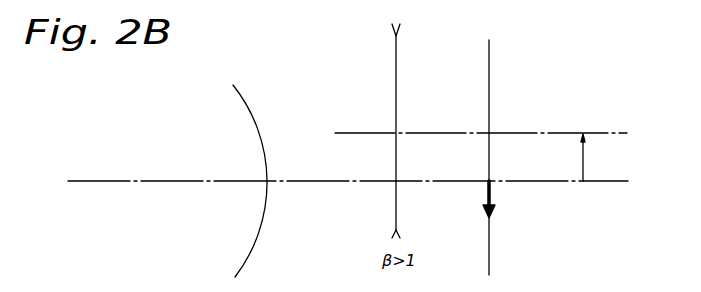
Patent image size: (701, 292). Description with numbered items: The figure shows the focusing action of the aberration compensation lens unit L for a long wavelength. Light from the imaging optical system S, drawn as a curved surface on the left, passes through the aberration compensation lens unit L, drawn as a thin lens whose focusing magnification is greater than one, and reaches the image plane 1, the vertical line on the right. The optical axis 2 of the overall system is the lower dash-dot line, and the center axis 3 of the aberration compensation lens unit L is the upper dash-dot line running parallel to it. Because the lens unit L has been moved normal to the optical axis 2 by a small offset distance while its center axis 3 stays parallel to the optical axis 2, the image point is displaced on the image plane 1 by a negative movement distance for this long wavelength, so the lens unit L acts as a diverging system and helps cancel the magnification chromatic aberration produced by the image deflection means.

The image plane 1 is at (490, 66).
The optical axis 2 is at (616, 180).
The center axis 3 is at (611, 132).
The imaging optical system S is at (243, 100).
The aberration compensation lens unit L is at (397, 72).